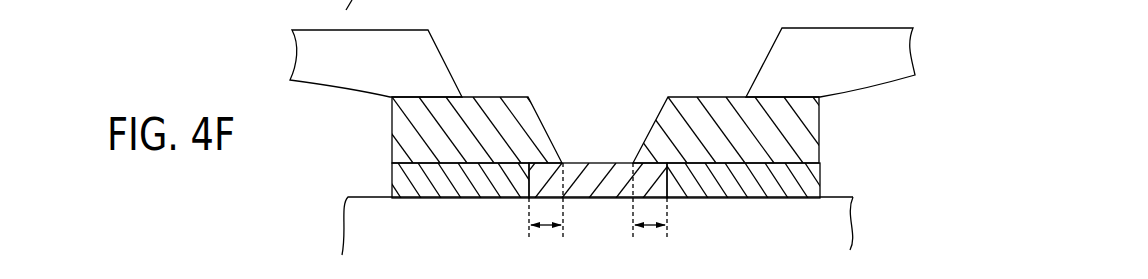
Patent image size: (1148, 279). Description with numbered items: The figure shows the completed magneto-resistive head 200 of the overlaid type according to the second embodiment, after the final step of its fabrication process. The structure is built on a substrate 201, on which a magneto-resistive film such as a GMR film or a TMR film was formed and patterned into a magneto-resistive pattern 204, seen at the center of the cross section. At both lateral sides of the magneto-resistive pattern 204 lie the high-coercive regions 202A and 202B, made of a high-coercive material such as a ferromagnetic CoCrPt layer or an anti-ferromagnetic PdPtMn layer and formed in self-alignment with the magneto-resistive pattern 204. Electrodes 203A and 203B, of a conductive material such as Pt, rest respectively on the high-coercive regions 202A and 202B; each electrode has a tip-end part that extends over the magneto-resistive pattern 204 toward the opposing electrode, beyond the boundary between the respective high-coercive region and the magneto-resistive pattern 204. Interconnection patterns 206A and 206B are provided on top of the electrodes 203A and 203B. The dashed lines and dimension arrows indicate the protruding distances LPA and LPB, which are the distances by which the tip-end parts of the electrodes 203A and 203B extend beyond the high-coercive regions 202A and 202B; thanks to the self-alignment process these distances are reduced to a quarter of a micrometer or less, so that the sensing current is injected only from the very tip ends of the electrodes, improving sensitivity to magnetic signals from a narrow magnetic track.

The magneto-resistive head 200 is at (628, 33).
The substrate 201 is at (822, 224).
The high-coercive region 202A is at (802, 178).
The high-coercive region 202B is at (413, 181).
The electrode 203A is at (802, 125).
The electrode 203B is at (417, 125).
The magneto-resistive pattern 204 is at (590, 172).
The interconnection pattern 206A is at (815, 50).
The interconnection pattern 206B is at (427, 69).
The protruding distance LPA is at (667, 228).
The protruding distance LPB is at (543, 229).